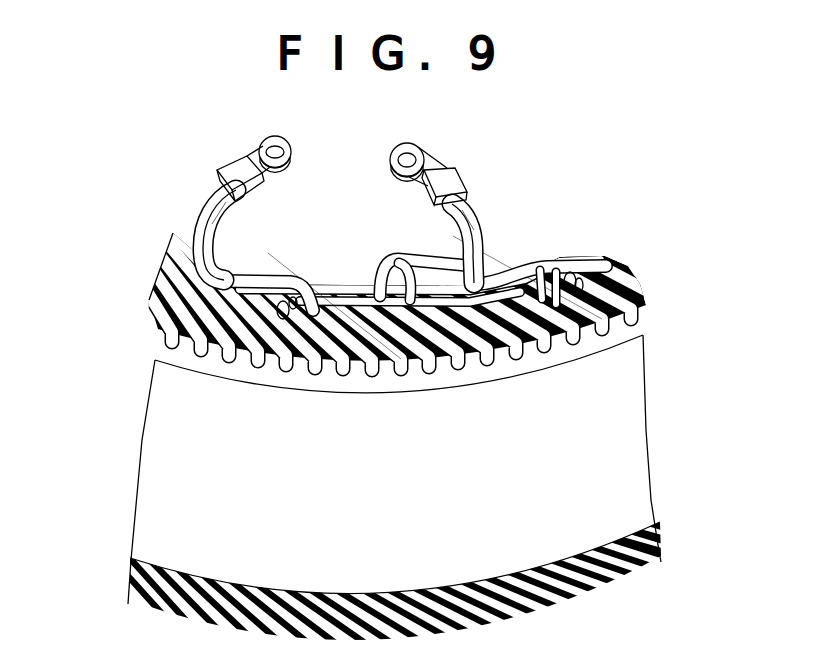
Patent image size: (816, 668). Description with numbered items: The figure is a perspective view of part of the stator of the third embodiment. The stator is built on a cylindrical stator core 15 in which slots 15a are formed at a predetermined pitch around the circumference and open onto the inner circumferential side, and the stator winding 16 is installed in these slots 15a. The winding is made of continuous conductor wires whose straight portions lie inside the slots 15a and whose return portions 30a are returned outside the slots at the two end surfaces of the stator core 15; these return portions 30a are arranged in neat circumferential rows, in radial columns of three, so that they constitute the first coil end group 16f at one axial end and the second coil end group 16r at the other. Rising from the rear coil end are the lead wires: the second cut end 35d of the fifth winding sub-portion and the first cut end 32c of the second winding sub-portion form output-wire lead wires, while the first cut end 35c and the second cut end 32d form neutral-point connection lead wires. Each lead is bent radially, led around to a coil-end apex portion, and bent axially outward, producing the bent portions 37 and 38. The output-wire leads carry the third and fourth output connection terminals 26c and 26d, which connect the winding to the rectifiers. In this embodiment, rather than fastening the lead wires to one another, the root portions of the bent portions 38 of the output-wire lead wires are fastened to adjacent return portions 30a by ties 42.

The stator core 15 is at (652, 338).
The slots 15a is at (603, 341).
The stator winding 16 is at (152, 268).
The second coil end group 16r is at (149, 304).
The first coil end group 16f is at (130, 575).
The return portions 30a is at (273, 352).
The third output connection terminal 26c is at (447, 163).
The fourth output connection terminal 26d is at (240, 158).
The first cut end of the second winding sub-portion 32c is at (200, 198).
The second cut end of the second winding sub-portion 32d is at (432, 247).
The first cut end of the fifth winding sub-portion 35c is at (248, 270).
The second cut end of the fifth winding sub-portion 35d is at (220, 227).
The bent portion of the first cut end 37 is at (540, 275).
The bent portion of the second cut end 38 is at (281, 300).
The ties 42 is at (291, 299).